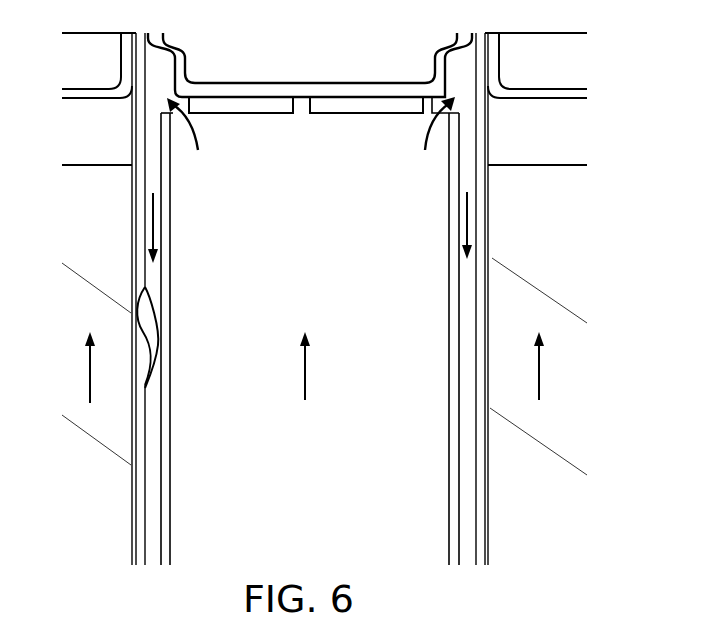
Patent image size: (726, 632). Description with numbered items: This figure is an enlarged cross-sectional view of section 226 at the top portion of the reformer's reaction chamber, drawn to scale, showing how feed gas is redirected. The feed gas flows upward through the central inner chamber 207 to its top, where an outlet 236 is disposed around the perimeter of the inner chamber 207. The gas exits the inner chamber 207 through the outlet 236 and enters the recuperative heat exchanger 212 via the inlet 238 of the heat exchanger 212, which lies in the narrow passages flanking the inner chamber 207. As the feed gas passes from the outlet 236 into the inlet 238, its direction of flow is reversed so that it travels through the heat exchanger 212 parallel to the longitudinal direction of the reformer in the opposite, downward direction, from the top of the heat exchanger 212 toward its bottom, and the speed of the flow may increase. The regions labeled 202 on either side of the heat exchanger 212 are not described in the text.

The block / substrate 202 is at (108, 539).
The inner chamber 207 is at (324, 474).
The recuperative heat exchanger 212 is at (465, 560).
The section 226 is at (604, 88).
The outlet 236 is at (170, 104).
The inlet 238 is at (153, 103).